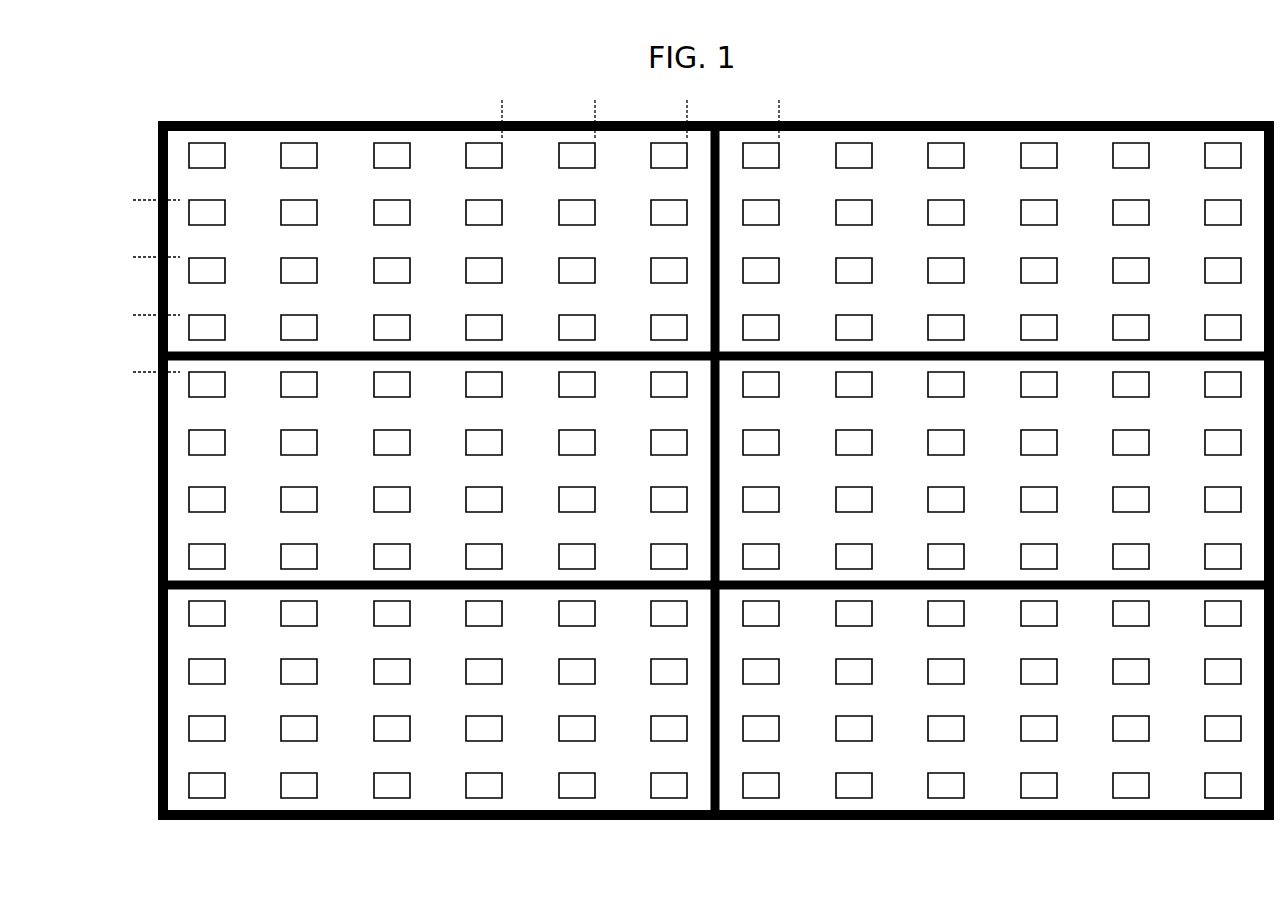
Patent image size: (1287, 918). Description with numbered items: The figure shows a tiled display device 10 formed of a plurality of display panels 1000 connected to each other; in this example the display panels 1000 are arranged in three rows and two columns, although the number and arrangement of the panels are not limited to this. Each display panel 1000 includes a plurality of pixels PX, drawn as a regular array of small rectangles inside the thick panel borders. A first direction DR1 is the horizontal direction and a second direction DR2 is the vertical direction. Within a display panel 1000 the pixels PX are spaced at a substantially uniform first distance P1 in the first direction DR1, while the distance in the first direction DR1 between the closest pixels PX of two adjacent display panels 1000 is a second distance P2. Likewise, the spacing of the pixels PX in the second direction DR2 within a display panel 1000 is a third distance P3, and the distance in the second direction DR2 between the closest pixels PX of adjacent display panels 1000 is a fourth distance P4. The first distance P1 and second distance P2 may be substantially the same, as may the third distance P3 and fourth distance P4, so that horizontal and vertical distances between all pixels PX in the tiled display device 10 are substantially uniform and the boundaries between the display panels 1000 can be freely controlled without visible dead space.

The display panel 1000 is at (268, 118).
The tiled display device 10 is at (1046, 101).
The pixel PX is at (715, 470).
The first distance P1 is at (595, 108).
The second distance P2 is at (779, 110).
The third distance P3 is at (145, 200).
The fourth distance P4 is at (145, 315).
The first direction DR1 is at (92, 832).
The second direction DR2 is at (92, 832).